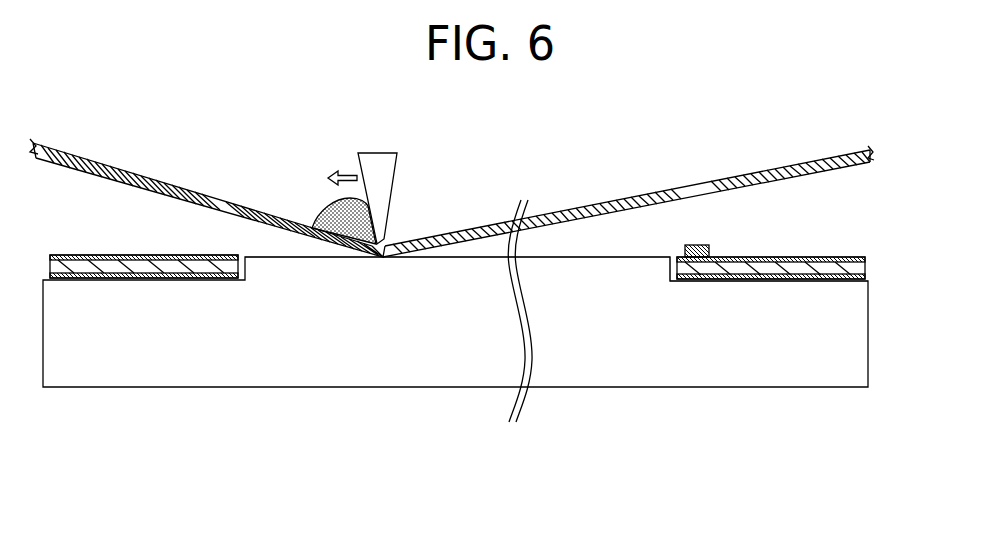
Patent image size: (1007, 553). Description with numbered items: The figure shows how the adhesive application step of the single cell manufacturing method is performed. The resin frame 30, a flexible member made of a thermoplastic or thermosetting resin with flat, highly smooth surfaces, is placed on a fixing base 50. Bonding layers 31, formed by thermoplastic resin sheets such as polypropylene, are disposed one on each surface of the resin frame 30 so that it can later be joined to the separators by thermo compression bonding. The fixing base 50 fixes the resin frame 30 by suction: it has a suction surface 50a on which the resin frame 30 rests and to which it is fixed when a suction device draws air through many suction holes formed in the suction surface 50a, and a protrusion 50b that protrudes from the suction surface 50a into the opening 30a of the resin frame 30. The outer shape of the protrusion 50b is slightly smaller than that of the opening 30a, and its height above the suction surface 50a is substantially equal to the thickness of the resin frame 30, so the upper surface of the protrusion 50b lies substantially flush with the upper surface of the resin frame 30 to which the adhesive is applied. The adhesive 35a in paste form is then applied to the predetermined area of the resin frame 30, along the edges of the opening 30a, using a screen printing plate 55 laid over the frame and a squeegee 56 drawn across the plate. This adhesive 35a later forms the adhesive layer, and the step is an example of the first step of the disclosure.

The resin frame 30 is at (813, 265).
The opening 30a is at (673, 259).
The bonding layers 31 is at (820, 257).
The adhesive 35a is at (320, 211).
The fixing base 50 is at (857, 345).
The suction surface 50a is at (736, 281).
The protrusion 50b is at (608, 265).
The screen printing plate 55 is at (146, 176).
The squeegee 56 is at (375, 162).